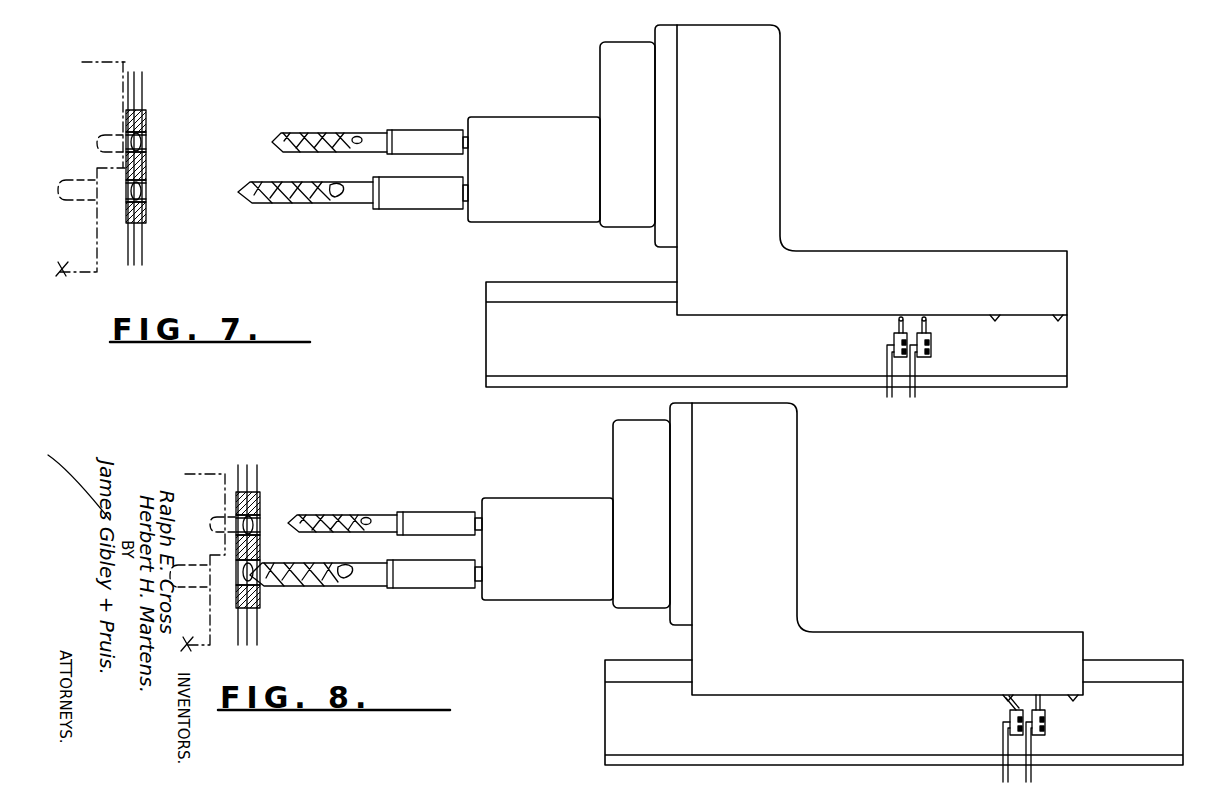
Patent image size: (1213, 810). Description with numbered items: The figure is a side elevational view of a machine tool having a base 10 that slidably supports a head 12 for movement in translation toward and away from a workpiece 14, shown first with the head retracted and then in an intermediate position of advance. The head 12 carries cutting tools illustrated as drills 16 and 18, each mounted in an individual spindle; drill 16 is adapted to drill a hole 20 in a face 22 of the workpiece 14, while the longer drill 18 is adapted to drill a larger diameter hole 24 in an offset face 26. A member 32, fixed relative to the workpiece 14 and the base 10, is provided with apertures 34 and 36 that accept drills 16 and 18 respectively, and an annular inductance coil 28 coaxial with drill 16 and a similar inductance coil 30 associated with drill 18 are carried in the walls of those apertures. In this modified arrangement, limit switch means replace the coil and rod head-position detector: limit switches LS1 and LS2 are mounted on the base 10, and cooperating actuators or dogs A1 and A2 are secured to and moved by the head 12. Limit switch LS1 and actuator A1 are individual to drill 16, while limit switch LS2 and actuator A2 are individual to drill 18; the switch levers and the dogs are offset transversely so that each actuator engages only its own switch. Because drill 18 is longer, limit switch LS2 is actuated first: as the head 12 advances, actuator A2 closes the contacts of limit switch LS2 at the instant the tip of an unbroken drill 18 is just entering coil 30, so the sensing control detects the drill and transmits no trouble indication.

In FIG. 7, the base 10 is at (556, 365).
In FIG. 8, the base 10 is at (795, 745).
In FIG. 7, the head 12 is at (782, 145).
In FIG. 8, the head 12 is at (800, 520).
In FIG. 7, the workpiece 14 is at (64, 274).
In FIG. 8, the workpiece 14 is at (188, 650).
In FIG. 7, the drill 16 is at (373, 138).
In FIG. 8, the drill 16 is at (385, 518).
In FIG. 7, the drill 18 is at (359, 197).
In FIG. 8, the drill 18 is at (368, 578).
In FIG. 7, the hole 20 is at (104, 134).
In FIG. 7, the face 22 is at (122, 63).
In FIG. 7, the hole 24 is at (80, 178).
In FIG. 7, the offset face 26 is at (100, 236).
In FIG. 7, the inductance coil 28 is at (147, 140).
In FIG. 8, the inductance coil 28 is at (262, 518).
In FIG. 7, the inductance coil 30 is at (147, 195).
In FIG. 8, the inductance coil 30 is at (262, 585).
In FIG. 7, the member 32 is at (147, 165).
In FIG. 8, the member 32 is at (262, 545).
In FIG. 7, the aperture 34 is at (147, 147).
In FIG. 7, the aperture 36 is at (147, 185).
In FIG. 7, the actuator A1 is at (1058, 316).
In FIG. 8, the actuator A1 is at (1073, 697).
In FIG. 7, the actuator A2 is at (995, 316).
In FIG. 8, the actuator A2 is at (1008, 697).
In FIG. 7, the limit switch LS1 is at (931, 338).
In FIG. 8, the limit switch LS1 is at (1045, 714).
In FIG. 7, the limit switch LS2 is at (894, 338).
In FIG. 8, the limit switch LS2 is at (1010, 718).